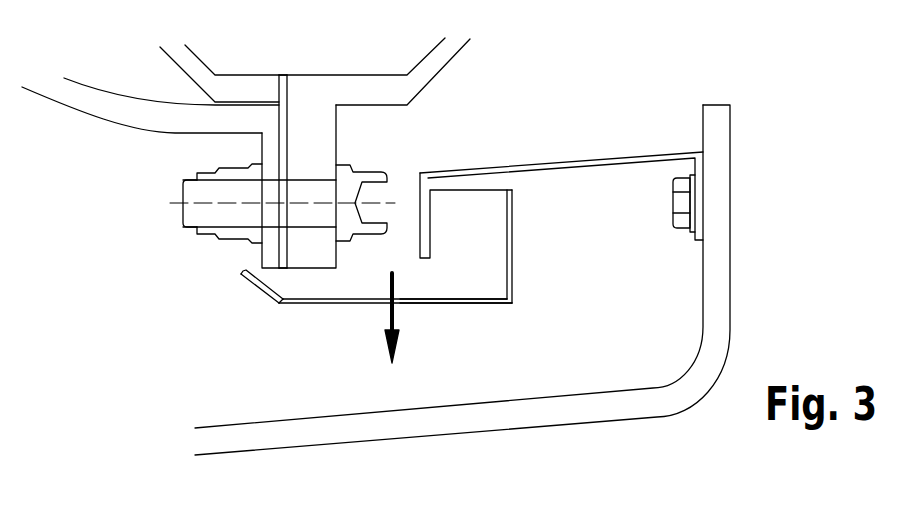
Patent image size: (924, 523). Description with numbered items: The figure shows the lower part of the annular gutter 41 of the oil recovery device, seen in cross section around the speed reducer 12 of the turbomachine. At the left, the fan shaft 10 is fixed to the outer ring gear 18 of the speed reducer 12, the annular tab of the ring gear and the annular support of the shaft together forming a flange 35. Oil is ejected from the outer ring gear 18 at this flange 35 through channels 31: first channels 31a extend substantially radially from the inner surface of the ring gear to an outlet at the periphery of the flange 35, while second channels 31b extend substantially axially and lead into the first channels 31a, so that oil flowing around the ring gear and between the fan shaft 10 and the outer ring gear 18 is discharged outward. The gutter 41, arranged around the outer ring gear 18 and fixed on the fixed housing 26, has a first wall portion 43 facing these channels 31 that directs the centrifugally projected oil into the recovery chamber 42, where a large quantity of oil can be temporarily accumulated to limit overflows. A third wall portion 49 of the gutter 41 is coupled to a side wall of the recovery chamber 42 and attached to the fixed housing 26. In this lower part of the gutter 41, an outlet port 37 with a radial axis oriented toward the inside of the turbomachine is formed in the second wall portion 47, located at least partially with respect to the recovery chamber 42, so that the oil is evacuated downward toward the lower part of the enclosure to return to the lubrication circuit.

The fan shaft 10 is at (135, 113).
The speed reducer 12 is at (479, 82).
The outer ring gear 18 is at (446, 52).
The fixed housing 26 is at (553, 410).
The channels 31 is at (304, 117).
The first channels 31a is at (283, 253).
The second channels 31b is at (257, 102).
The flange 35 is at (370, 138).
The outlet port 37 is at (427, 303).
The annular gutter 41 is at (292, 303).
The recovery chamber 42 is at (482, 227).
The first wall portion 43 is at (256, 288).
The second wall portion 47 is at (318, 303).
The third wall portion 49 is at (597, 160).